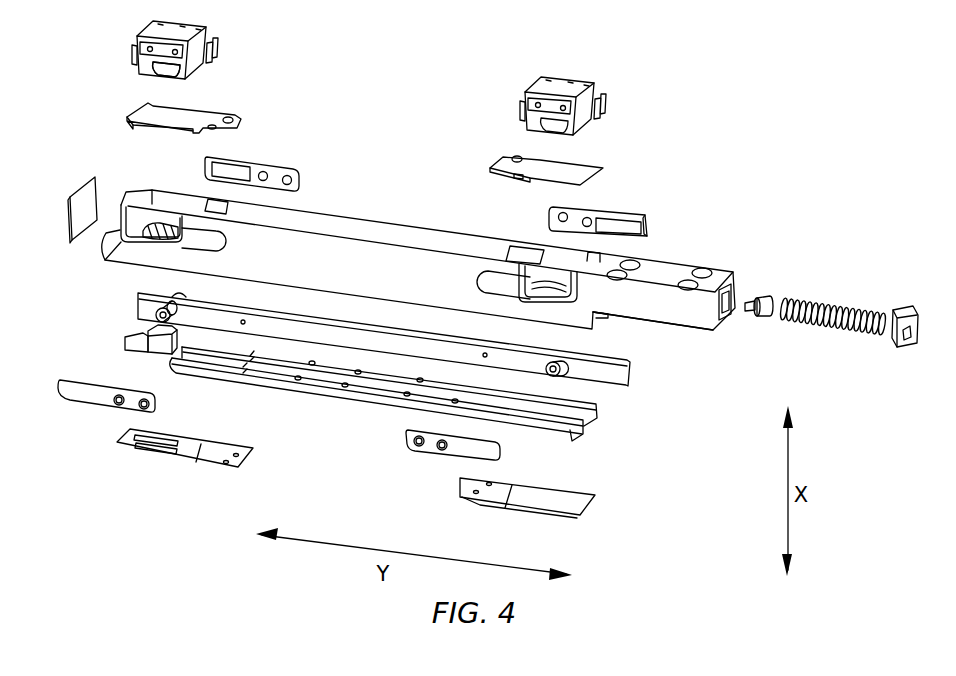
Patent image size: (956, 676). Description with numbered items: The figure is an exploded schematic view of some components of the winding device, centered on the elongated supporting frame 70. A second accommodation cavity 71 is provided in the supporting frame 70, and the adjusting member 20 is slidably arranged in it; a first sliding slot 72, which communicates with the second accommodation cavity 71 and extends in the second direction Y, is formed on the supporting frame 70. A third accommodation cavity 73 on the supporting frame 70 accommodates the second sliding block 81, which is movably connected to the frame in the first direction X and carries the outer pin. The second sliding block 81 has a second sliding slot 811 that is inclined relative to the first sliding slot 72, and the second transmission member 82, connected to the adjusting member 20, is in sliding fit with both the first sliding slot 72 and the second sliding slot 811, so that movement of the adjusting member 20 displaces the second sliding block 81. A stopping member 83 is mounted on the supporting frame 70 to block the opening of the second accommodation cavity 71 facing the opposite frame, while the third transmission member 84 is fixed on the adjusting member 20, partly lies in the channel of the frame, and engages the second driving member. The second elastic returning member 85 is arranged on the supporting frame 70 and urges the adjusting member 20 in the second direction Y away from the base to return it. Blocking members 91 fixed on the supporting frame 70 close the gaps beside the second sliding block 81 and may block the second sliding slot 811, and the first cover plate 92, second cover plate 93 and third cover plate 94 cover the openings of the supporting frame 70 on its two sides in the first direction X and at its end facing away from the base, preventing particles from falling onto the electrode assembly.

The adjusting member 20 is at (625, 352).
The supporting frame 70 is at (367, 238).
The second accommodation cavity 71 is at (745, 322).
The first sliding slot 72 is at (140, 251).
The third accommodation cavity 73 is at (612, 256).
The second sliding block 81 is at (206, 29).
The second sliding slot 811 is at (136, 82).
The second transmission member 82 is at (140, 303).
The stopping member 83 is at (578, 425).
The third transmission member 84 is at (140, 347).
The second elastic returning member 85 is at (815, 320).
The blocking member 91 is at (277, 165).
The first cover plate 92 is at (210, 115).
The second cover plate 93 is at (130, 195).
The third cover plate 94 is at (90, 190).